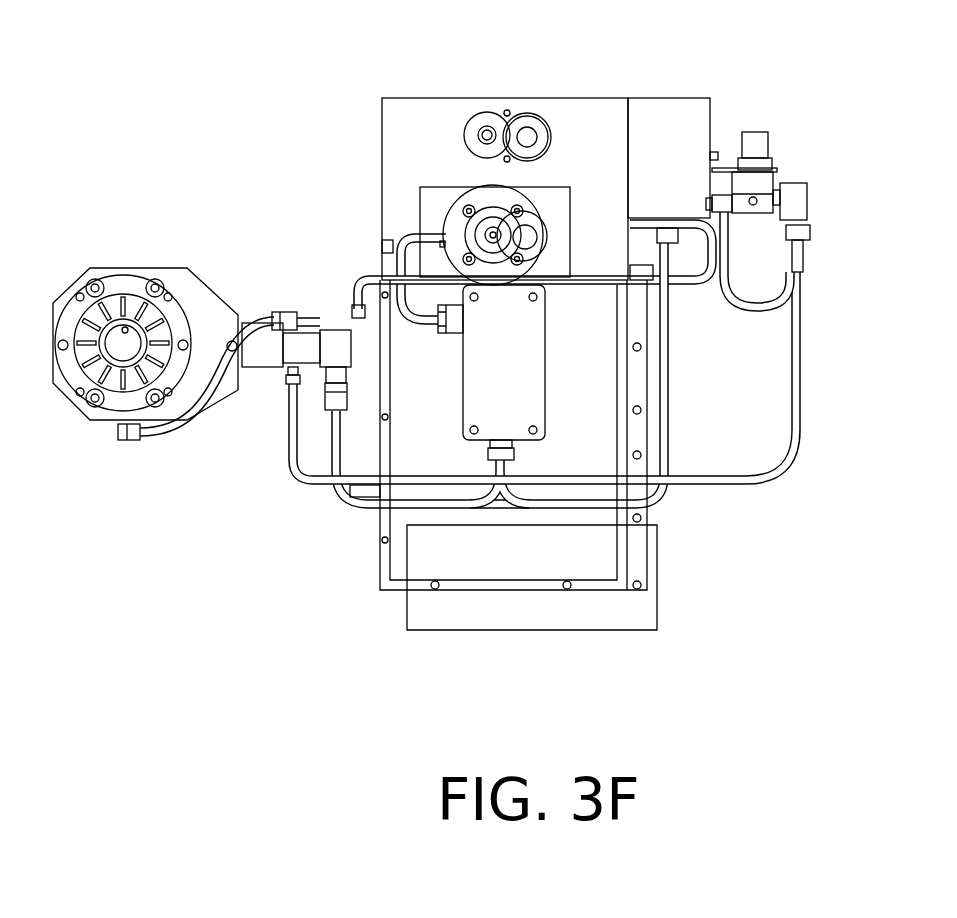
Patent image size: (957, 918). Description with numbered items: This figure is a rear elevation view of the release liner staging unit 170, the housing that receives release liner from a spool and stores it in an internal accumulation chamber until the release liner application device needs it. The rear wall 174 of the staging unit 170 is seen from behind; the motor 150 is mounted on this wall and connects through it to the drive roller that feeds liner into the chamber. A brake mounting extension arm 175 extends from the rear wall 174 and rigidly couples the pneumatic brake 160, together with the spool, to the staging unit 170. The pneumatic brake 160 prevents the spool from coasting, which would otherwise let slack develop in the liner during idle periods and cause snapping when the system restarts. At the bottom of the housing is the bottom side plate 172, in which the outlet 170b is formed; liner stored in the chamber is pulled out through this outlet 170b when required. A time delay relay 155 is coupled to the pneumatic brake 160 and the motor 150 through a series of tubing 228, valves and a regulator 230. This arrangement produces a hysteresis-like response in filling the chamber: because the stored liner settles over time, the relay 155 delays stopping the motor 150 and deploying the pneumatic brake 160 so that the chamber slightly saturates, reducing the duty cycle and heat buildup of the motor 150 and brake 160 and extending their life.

The release liner staging unit 170 is at (492, 361).
The outlet 170b is at (568, 590).
The bottom side plate 172 is at (393, 590).
The rear wall 174 is at (437, 115).
The motor 150 is at (483, 197).
The time delay relay 155 is at (523, 377).
The pneumatic brake 160 is at (127, 275).
The brake mounting extension arm 175 is at (266, 358).
The tubing 228 is at (748, 312).
The regulator 230 is at (760, 130).